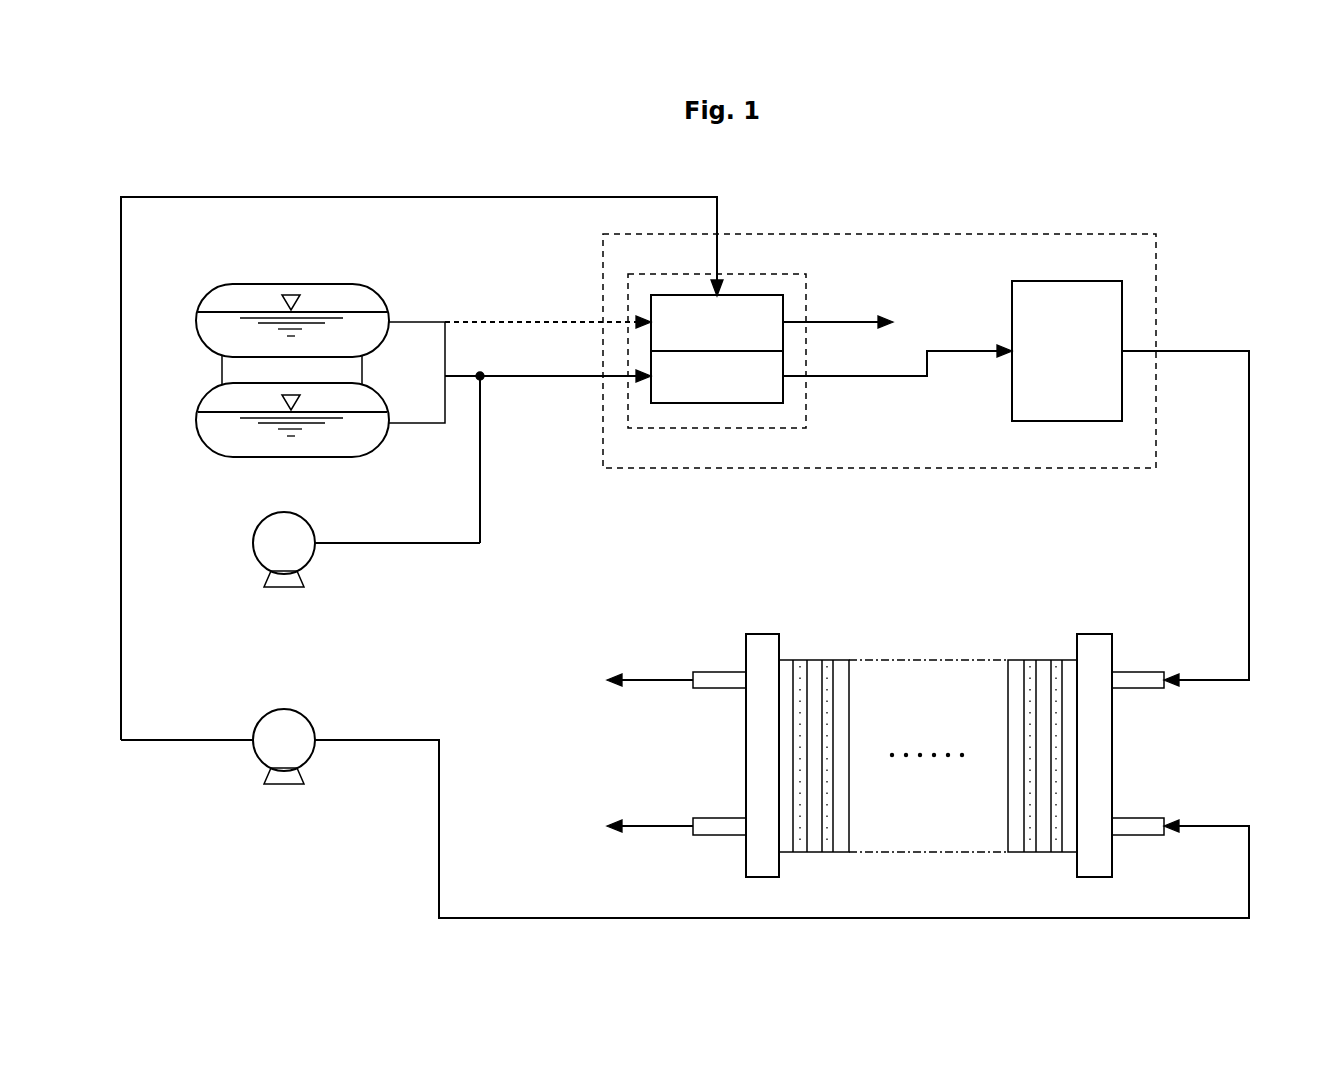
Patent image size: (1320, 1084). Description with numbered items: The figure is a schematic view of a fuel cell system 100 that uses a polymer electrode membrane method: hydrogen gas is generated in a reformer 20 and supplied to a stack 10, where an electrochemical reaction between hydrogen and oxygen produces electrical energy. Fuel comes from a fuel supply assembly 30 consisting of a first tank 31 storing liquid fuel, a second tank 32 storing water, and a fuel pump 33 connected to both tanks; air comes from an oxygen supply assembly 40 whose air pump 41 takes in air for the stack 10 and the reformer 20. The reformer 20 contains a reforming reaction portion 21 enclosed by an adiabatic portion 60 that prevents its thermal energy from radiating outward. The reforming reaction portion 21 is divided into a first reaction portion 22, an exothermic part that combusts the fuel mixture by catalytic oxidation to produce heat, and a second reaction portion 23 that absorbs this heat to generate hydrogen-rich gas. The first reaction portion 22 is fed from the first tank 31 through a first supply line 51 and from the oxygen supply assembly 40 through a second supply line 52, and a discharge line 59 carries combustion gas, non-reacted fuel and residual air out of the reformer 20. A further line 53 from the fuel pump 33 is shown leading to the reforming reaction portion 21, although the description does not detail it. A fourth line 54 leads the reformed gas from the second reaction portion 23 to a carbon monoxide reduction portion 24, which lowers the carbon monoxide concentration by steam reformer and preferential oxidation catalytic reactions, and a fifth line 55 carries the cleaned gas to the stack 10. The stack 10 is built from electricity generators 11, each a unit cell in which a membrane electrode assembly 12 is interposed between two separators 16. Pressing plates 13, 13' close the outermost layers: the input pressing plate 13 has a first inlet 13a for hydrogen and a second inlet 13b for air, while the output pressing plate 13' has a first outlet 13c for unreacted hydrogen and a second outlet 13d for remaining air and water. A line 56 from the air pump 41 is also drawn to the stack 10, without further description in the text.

The fuel cell system 100 is at (1228, 210).
The stack 10 is at (934, 622).
The electricity generator 11 is at (928, 708).
The membrane electrode assembly 12 is at (827, 660).
The separator 16 is at (930, 729).
The pressing plate 13 is at (1117, 762).
The pressing plate 13' is at (733, 760).
The first inlet 13a is at (1144, 672).
The second inlet 13b is at (1144, 818).
The first outlet 13c is at (713, 818).
The second outlet 13d is at (713, 672).
The reformer 20 is at (808, 226).
The reforming reaction portion 21 is at (686, 412).
The first reaction portion 22 is at (775, 295).
The second reaction portion 23 is at (776, 404).
The carbon monoxide reduction portion 24 is at (1086, 279).
The fuel supply assembly 30 is at (307, 418).
The first tank 31 is at (246, 285).
The second tank 32 is at (244, 458).
The fuel pump 33 is at (294, 513).
The oxygen supply assembly 40 is at (218, 750).
The air pump 41 is at (292, 711).
The first supply line 51 is at (545, 322).
The second supply line 52 is at (440, 197).
The third supply line 53 is at (543, 378).
The fourth line 54 is at (866, 378).
The fifth line 55 is at (1249, 543).
The sixth supply line 56 is at (820, 918).
The discharge line 59 is at (845, 322).
The adiabatic portion 60 is at (740, 266).